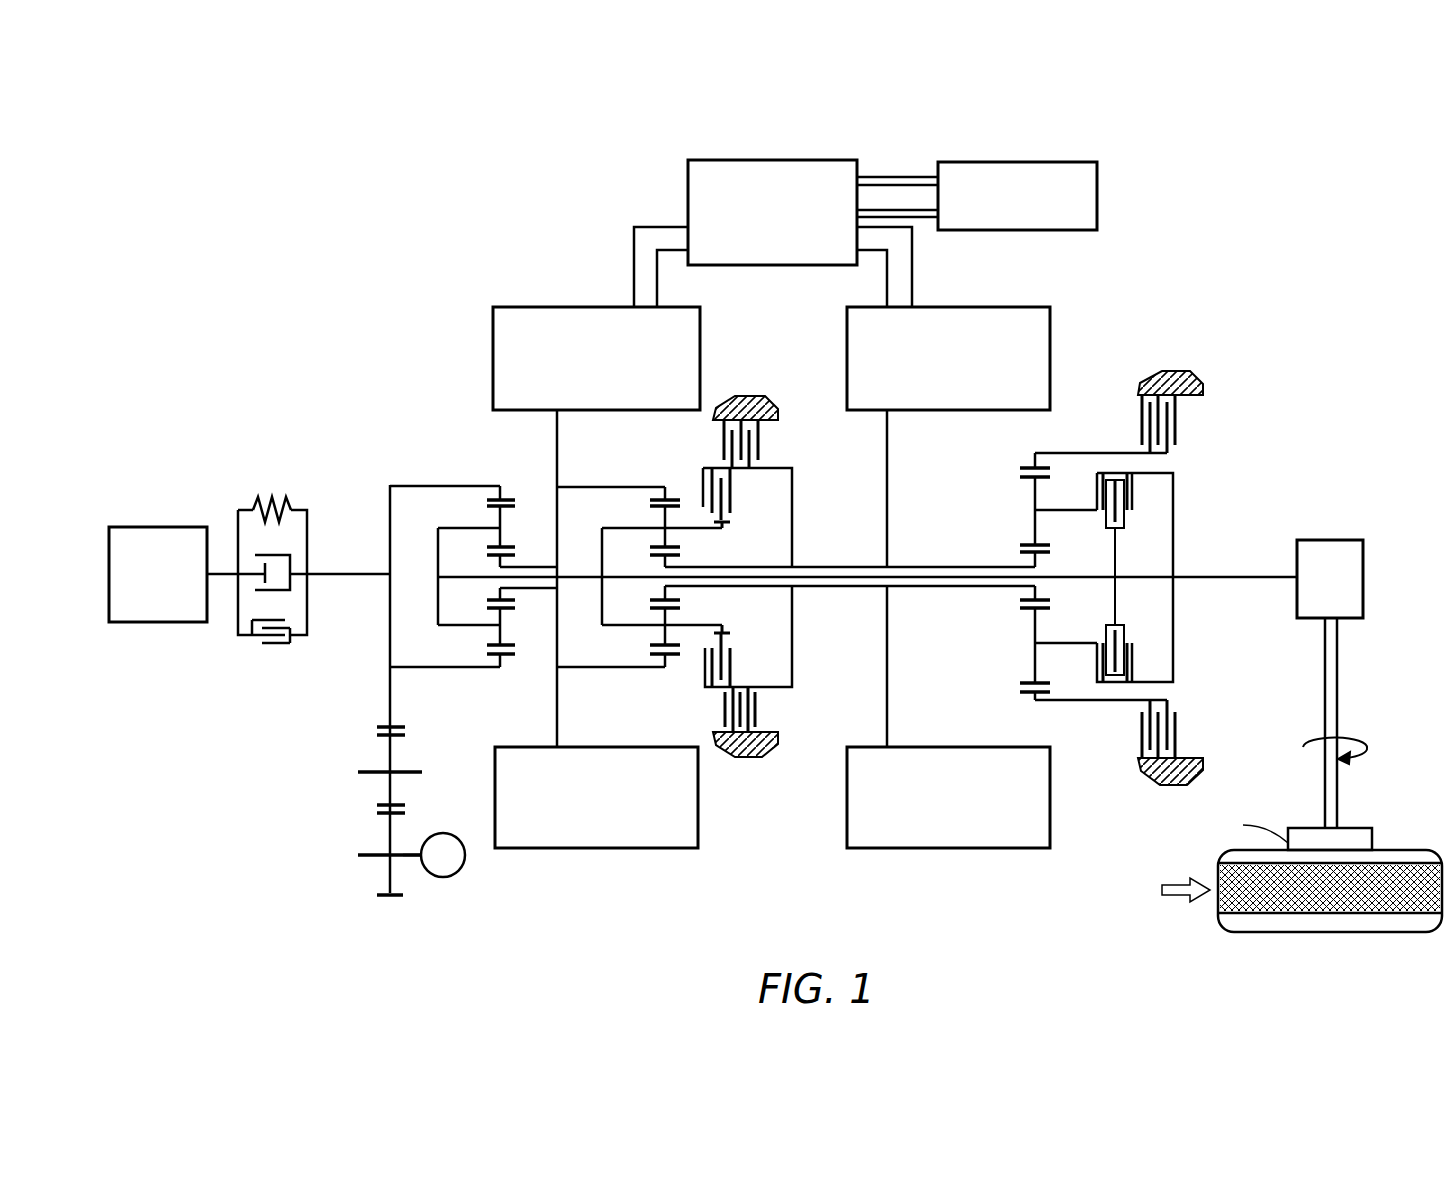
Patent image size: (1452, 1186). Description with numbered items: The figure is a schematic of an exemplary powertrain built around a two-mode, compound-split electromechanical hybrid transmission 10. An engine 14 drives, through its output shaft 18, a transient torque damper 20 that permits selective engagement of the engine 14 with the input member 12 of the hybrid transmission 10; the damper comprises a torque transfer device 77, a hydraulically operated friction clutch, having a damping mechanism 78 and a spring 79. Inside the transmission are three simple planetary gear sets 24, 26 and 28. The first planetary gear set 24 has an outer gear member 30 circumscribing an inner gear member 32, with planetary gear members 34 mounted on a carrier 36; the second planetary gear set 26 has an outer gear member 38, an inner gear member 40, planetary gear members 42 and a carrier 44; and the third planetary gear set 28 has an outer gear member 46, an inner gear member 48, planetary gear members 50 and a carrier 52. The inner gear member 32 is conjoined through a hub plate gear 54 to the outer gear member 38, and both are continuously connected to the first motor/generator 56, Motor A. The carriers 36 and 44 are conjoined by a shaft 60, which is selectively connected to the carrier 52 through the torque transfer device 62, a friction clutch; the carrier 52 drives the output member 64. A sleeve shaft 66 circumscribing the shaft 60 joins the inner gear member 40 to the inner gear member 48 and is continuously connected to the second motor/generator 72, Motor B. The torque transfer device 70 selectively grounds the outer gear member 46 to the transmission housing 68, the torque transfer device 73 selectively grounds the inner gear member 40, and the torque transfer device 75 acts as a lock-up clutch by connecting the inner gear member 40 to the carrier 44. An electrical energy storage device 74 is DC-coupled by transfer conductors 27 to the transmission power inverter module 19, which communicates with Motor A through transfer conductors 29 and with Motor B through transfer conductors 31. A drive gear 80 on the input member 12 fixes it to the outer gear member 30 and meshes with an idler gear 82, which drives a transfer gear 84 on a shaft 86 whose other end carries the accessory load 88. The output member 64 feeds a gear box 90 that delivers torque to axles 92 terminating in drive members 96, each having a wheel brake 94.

The hybrid transmission 10 is at (455, 265).
The input member 12 is at (375, 570).
The engine 14 is at (168, 525).
The output shaft 18 is at (228, 572).
The transmission power inverter module 19 is at (688, 177).
The transient torque damper 20 is at (260, 425).
The first planetary gear set 24 is at (486, 474).
The second planetary gear set 26 is at (660, 475).
The transfer conductors 27 is at (898, 177).
The third planetary gear set 28 is at (1025, 445).
The transfer conductors 29 is at (633, 267).
The outer gear member 30 is at (507, 498).
The transfer conductors 31 is at (913, 262).
The inner gear member 32 is at (503, 565).
The planetary gear members 34 is at (497, 518).
The carrier 36 is at (436, 600).
The outer gear member 38 is at (671, 496).
The inner gear member 40 is at (672, 565).
The planetary gear members 42 is at (663, 518).
The carrier 44 is at (600, 603).
The outer gear member 46 is at (1025, 462).
The inner gear member 48 is at (1025, 560).
The planetary gear members 50 is at (1032, 482).
The carrier 52 is at (1175, 483).
The hub plate gear 54 is at (560, 545).
The first motor/generator 56 is at (493, 343).
The shaft 60 is at (860, 575).
The torque transfer device 62 is at (1142, 516).
The output member 64 is at (1270, 575).
The sleeve shaft 66 is at (830, 565).
The transmission housing 68 is at (740, 403).
The torque transfer device 70 is at (1129, 412).
The second motor/generator 72 is at (1052, 323).
The torque transfer device 73 is at (772, 443).
The electrical energy storage device 74 is at (1100, 180).
The torque transfer device 75 is at (750, 498).
The torque transfer device 77 is at (247, 643).
The damping mechanism 78 is at (283, 553).
The spring 79 is at (262, 498).
The drive gear 80 is at (388, 626).
The idler gear 82 is at (388, 762).
The transfer gear 84 is at (387, 873).
The shaft 86 is at (410, 857).
The accessory load 88 is at (453, 875).
The gear box 90 is at (1296, 603).
The axles 92 is at (1338, 700).
The wheel brake 94 is at (1372, 838).
The drive members 96 is at (1248, 922).